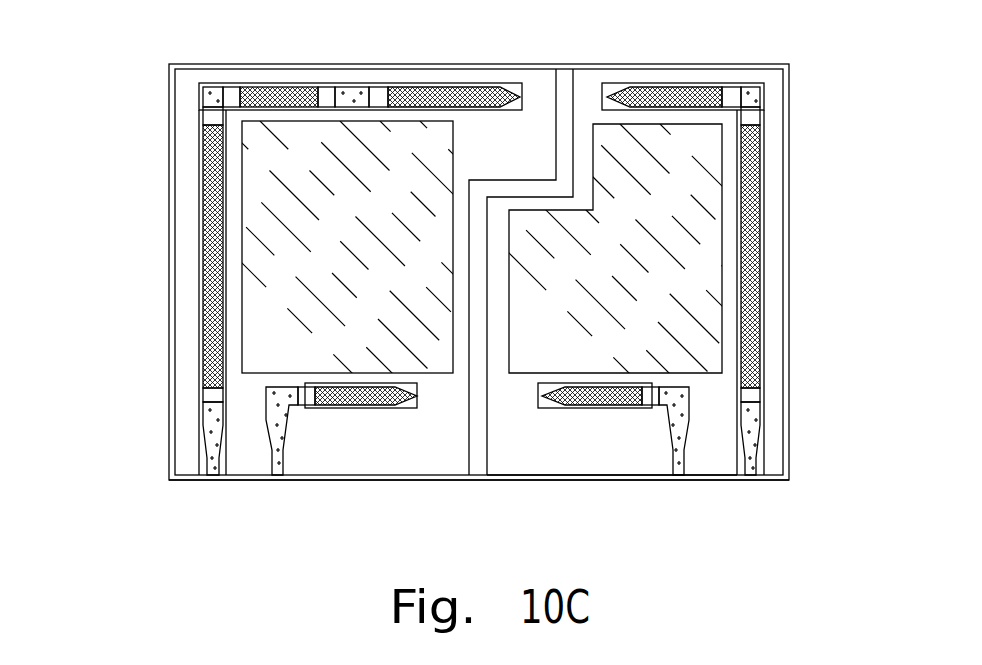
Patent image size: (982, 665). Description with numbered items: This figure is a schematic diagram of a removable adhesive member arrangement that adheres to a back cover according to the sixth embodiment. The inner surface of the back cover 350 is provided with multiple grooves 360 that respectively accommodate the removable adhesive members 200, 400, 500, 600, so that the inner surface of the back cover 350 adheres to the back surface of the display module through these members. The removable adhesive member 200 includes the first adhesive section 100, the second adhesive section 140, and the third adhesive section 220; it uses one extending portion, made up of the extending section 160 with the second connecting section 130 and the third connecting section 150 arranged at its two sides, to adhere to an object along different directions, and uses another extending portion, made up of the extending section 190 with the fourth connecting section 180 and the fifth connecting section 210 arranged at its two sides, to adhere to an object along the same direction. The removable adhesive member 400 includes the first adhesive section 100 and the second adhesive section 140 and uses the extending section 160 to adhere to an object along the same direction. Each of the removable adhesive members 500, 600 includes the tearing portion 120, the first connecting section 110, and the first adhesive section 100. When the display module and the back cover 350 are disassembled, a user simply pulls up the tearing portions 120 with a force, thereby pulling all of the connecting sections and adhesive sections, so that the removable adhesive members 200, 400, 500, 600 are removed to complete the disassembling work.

The first adhesive section 100 is at (204, 268).
The first connecting section 110 is at (204, 392).
The tearing portion 120 is at (220, 465).
The second connecting section 130 is at (204, 117).
The second adhesive section 140 is at (276, 87).
The third connecting section 150 is at (240, 87).
The extending section 160 is at (210, 87).
The fourth connecting section 180 is at (323, 87).
The extending section 190 is at (350, 87).
The removable adhesive member 200 is at (188, 226).
The fifth connecting section 210 is at (381, 87).
The third adhesive section 220 is at (449, 87).
The back cover 350 is at (169, 88).
The groove 360 is at (200, 456).
The removable adhesive member 400 is at (770, 220).
The removable adhesive member 500 is at (372, 480).
The removable adhesive member 600 is at (585, 450).